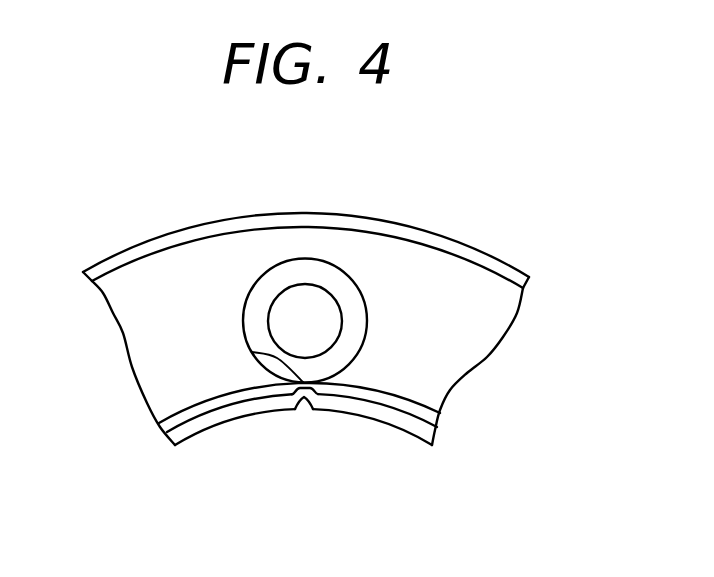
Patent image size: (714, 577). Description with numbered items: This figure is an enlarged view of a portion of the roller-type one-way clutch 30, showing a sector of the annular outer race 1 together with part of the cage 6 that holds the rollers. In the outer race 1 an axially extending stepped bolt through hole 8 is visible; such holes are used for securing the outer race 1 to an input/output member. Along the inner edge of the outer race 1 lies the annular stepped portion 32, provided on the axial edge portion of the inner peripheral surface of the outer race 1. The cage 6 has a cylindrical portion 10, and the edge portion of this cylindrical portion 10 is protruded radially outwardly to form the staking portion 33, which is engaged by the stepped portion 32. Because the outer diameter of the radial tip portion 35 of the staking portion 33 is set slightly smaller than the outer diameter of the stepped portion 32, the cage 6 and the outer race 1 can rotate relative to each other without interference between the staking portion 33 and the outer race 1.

The outer race 1 is at (163, 283).
The cage 6 is at (202, 442).
The bolt through hole 8 is at (292, 285).
The cylindrical portion 10 is at (410, 425).
The one-way clutch 30 is at (488, 212).
The stepped portion 32 is at (412, 407).
The staking portion 33 is at (304, 400).
The radial tip portion 35 is at (252, 352).